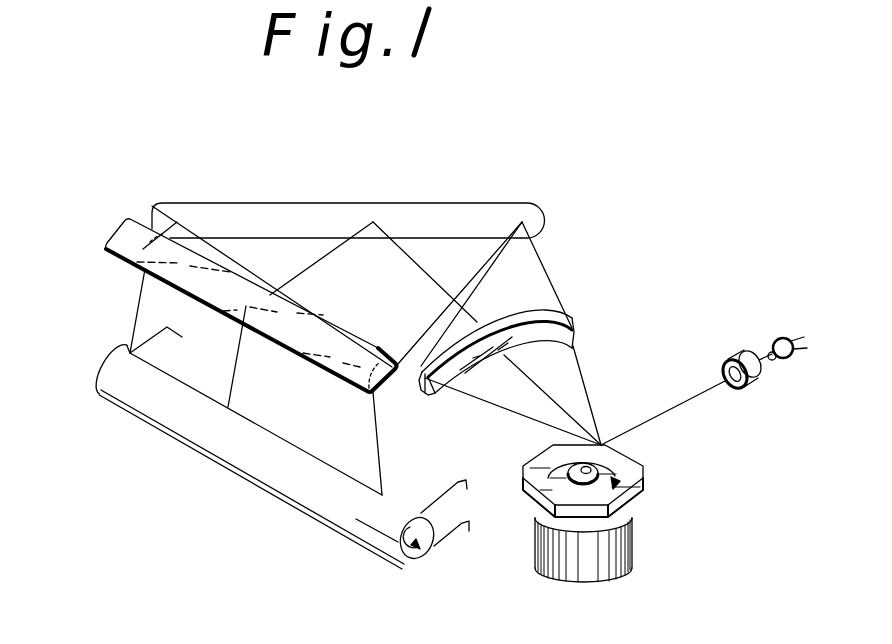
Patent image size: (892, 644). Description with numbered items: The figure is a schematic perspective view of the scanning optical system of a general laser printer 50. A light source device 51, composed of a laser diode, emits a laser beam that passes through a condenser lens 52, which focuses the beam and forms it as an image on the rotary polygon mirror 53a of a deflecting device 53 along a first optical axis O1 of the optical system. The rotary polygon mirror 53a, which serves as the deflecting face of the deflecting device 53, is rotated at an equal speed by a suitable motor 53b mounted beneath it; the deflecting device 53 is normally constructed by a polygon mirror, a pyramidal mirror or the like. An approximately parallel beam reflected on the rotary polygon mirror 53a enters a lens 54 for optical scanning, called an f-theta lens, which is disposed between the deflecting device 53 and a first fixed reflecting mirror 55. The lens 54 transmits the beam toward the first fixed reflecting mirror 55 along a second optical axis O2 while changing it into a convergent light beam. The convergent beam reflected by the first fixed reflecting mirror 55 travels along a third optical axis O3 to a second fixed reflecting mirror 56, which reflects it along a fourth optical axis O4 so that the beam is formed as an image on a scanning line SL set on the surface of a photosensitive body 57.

The laser printer 50 is at (160, 182).
The light source device 51 is at (799, 358).
The condenser lens 52 is at (760, 389).
The deflecting device 53 is at (645, 530).
The rotary polygon mirror 53a is at (647, 482).
The motor 53b is at (630, 559).
The lens for optical scanning 54 is at (574, 337).
The first fixed reflecting mirror 55 is at (548, 215).
The second fixed reflecting mirror 56 is at (330, 336).
The photosensitive body 57 is at (468, 538).
The first optical axis O1 is at (671, 410).
The second optical axis O2 is at (431, 278).
The third optical axis O3 is at (284, 287).
The fourth optical axis O4 is at (233, 373).
The scanning line SL is at (337, 467).